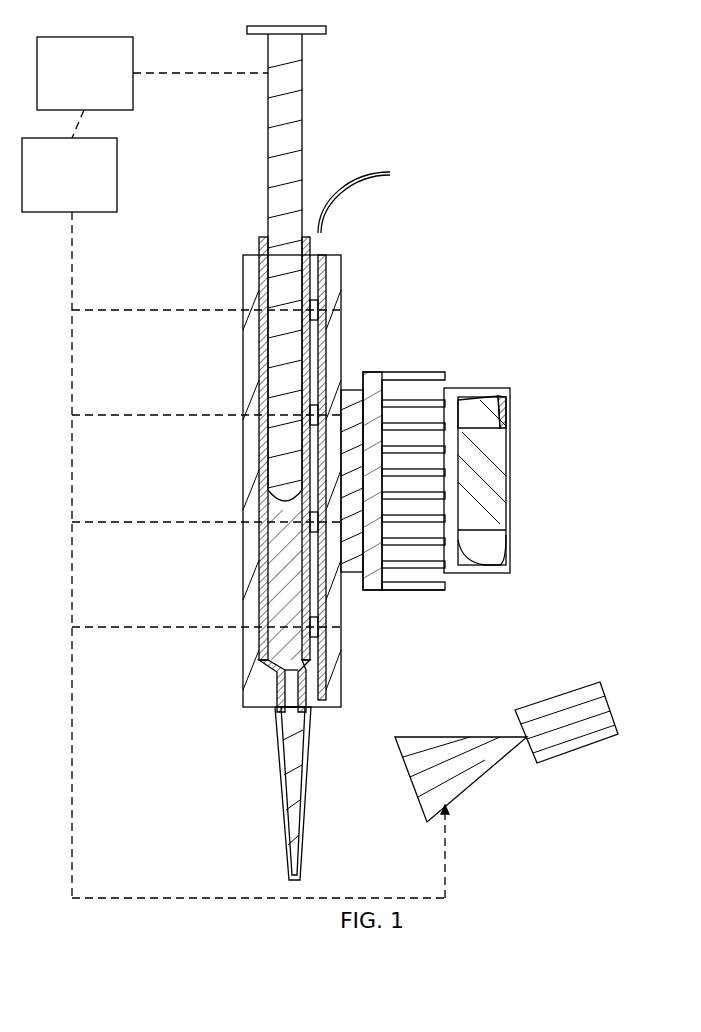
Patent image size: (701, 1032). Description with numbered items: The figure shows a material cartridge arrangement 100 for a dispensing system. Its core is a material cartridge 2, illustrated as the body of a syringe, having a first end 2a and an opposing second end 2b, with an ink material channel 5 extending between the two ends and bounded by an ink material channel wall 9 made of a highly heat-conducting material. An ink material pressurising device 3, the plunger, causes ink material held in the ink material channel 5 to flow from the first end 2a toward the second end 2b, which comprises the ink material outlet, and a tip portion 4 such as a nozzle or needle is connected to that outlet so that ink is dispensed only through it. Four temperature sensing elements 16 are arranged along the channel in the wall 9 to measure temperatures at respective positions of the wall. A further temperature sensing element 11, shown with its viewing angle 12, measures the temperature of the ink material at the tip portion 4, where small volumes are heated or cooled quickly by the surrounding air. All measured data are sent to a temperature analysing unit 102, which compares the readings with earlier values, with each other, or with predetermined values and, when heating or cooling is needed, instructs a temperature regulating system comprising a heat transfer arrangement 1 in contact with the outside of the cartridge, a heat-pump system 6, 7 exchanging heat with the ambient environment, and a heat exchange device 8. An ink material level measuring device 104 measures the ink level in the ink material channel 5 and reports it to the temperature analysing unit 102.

The heat transfer arrangement 1 is at (243, 305).
The material cartridge 2 is at (258, 362).
The first end 2a is at (392, 232).
The second end 2b is at (226, 712).
The ink material pressurising device 3 is at (265, 185).
The tip portion 4 is at (280, 762).
The ink material channel 5 is at (258, 618).
The heat-pump system 6 is at (356, 388).
The heat-pump system 7 is at (440, 372).
The heat exchange device 8 is at (485, 575).
The ink material channel wall 9 is at (325, 247).
The temperature sensing element 11 is at (566, 760).
The viewing angle 12 is at (473, 783).
The temperature sensing elements 16 is at (318, 303).
The material cartridge arrangement 100 is at (563, 282).
The temperature analysing unit 102 is at (69, 175).
The ink material level measuring device 104 is at (85, 73).